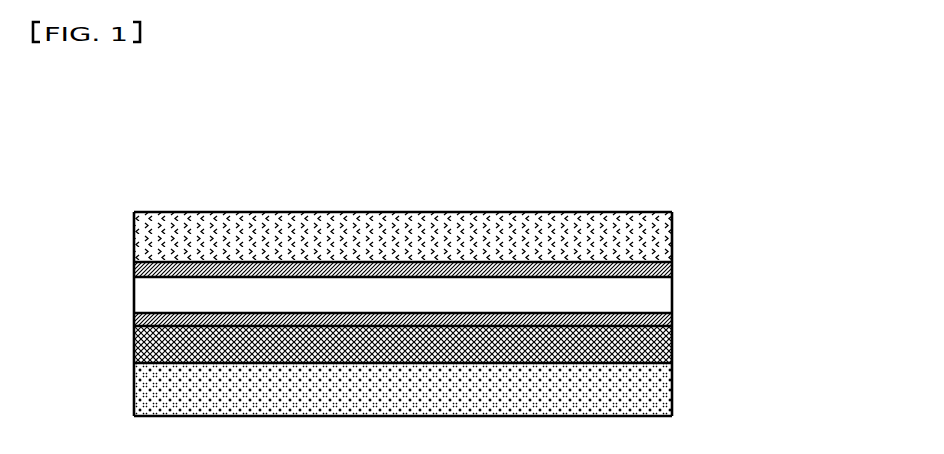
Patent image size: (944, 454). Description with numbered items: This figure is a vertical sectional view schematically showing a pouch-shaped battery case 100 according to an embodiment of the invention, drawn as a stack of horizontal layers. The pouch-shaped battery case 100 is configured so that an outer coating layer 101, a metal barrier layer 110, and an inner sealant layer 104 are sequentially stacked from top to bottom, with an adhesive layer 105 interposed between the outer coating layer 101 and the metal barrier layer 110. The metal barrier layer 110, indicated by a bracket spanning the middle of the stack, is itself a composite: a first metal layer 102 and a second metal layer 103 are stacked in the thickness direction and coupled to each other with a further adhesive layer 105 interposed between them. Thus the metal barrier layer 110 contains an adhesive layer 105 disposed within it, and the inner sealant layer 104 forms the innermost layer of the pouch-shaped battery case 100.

The pouch-shaped battery case 100 is at (112, 148).
The outer coating layer 101 is at (672, 225).
The first metal layer 102 is at (672, 296).
The second metal layer 103 is at (672, 352).
The inner sealant layer 104 is at (672, 393).
The adhesive layer 105 is at (672, 270).
The metal barrier layer 110 is at (502, 306).